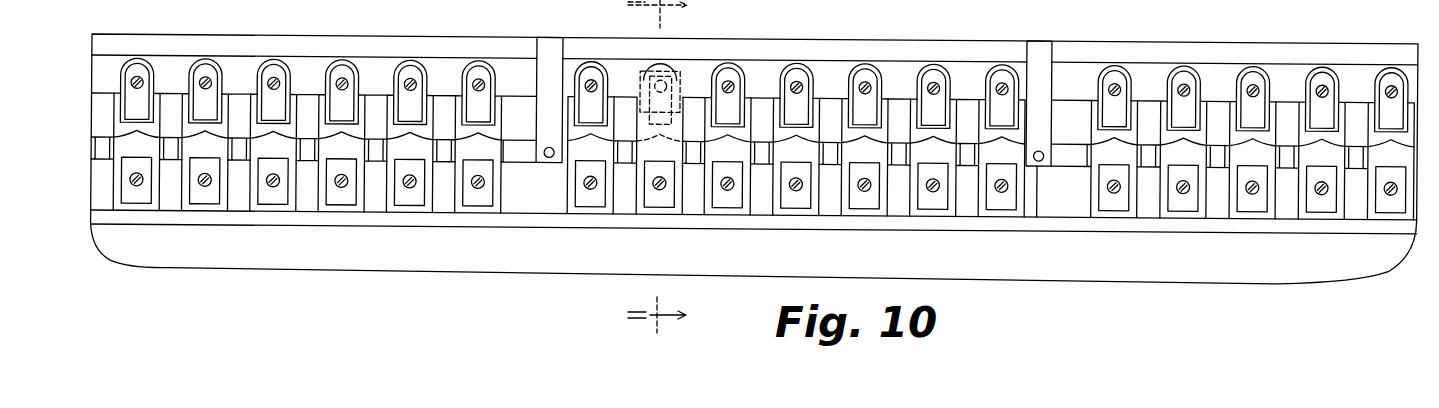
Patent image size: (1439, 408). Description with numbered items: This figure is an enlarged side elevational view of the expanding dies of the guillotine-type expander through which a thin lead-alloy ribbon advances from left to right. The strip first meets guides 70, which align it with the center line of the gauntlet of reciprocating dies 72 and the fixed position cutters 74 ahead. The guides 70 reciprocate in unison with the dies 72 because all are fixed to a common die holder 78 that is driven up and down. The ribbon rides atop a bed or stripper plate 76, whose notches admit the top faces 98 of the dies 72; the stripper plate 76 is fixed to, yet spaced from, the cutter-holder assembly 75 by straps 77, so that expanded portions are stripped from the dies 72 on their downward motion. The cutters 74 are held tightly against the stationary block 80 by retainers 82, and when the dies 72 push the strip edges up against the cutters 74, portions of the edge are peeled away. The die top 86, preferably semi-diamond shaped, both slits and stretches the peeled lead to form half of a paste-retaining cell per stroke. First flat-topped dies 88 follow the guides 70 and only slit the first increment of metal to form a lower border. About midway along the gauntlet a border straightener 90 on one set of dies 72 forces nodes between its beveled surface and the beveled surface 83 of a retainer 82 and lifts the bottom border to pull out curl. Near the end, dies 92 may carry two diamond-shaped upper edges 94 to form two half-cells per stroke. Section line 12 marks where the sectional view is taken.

The section line 12- 12 is at (673, 167).
The guides 70 is at (152, 197).
The reciprocating dies 72 is at (388, 196).
The fixed position cutters 74 is at (460, 120).
The cutter-holder assembly 75 is at (768, 53).
The stripper plate 76 is at (530, 153).
The straps 77 is at (549, 53).
The die holder 78 is at (517, 202).
The stationary block 80 is at (517, 97).
The retainers 82 is at (344, 72).
The beveled surface 83 is at (344, 105).
The die top 86 is at (330, 148).
The first flat-topped dies 88 is at (193, 143).
The border straightener 90 is at (681, 82).
The dies near the end of the gauntlet 92 is at (1373, 215).
The diamond-shaped upper edges 94 is at (1368, 147).
The top faces 98 is at (486, 151).